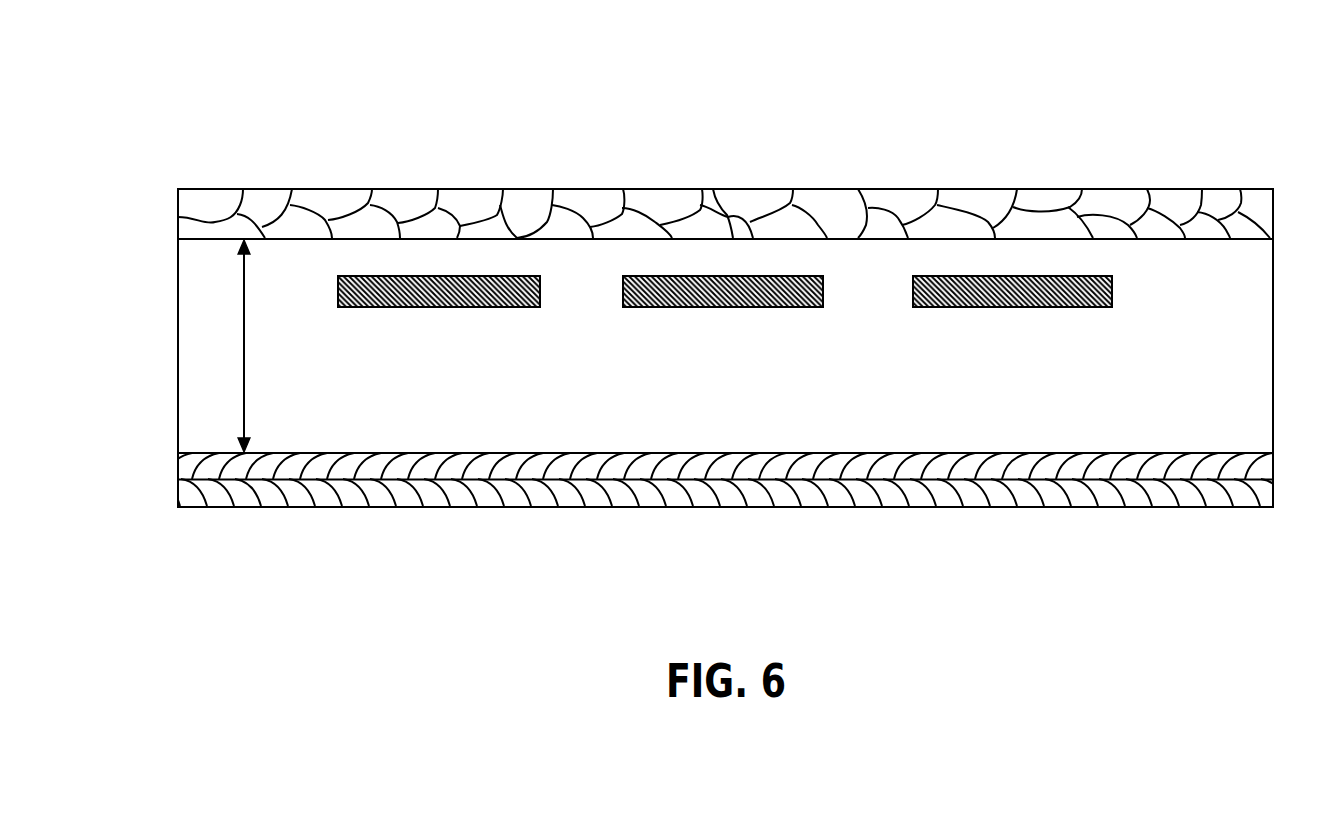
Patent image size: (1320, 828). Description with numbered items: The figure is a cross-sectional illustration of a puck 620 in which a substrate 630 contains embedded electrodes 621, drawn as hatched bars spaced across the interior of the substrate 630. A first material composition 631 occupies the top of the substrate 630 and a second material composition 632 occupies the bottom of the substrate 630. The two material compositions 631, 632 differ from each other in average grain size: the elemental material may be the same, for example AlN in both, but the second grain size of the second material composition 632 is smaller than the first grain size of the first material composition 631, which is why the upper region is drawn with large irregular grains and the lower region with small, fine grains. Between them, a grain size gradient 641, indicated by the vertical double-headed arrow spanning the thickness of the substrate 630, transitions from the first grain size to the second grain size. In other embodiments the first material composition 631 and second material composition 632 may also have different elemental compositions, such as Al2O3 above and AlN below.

The puck 620 is at (1198, 80).
The embedded electrodes 621 is at (728, 292).
The substrate 630 is at (1207, 430).
The first material composition 631 is at (337, 202).
The second material composition 632 is at (321, 492).
The grain size gradient 641 is at (244, 347).